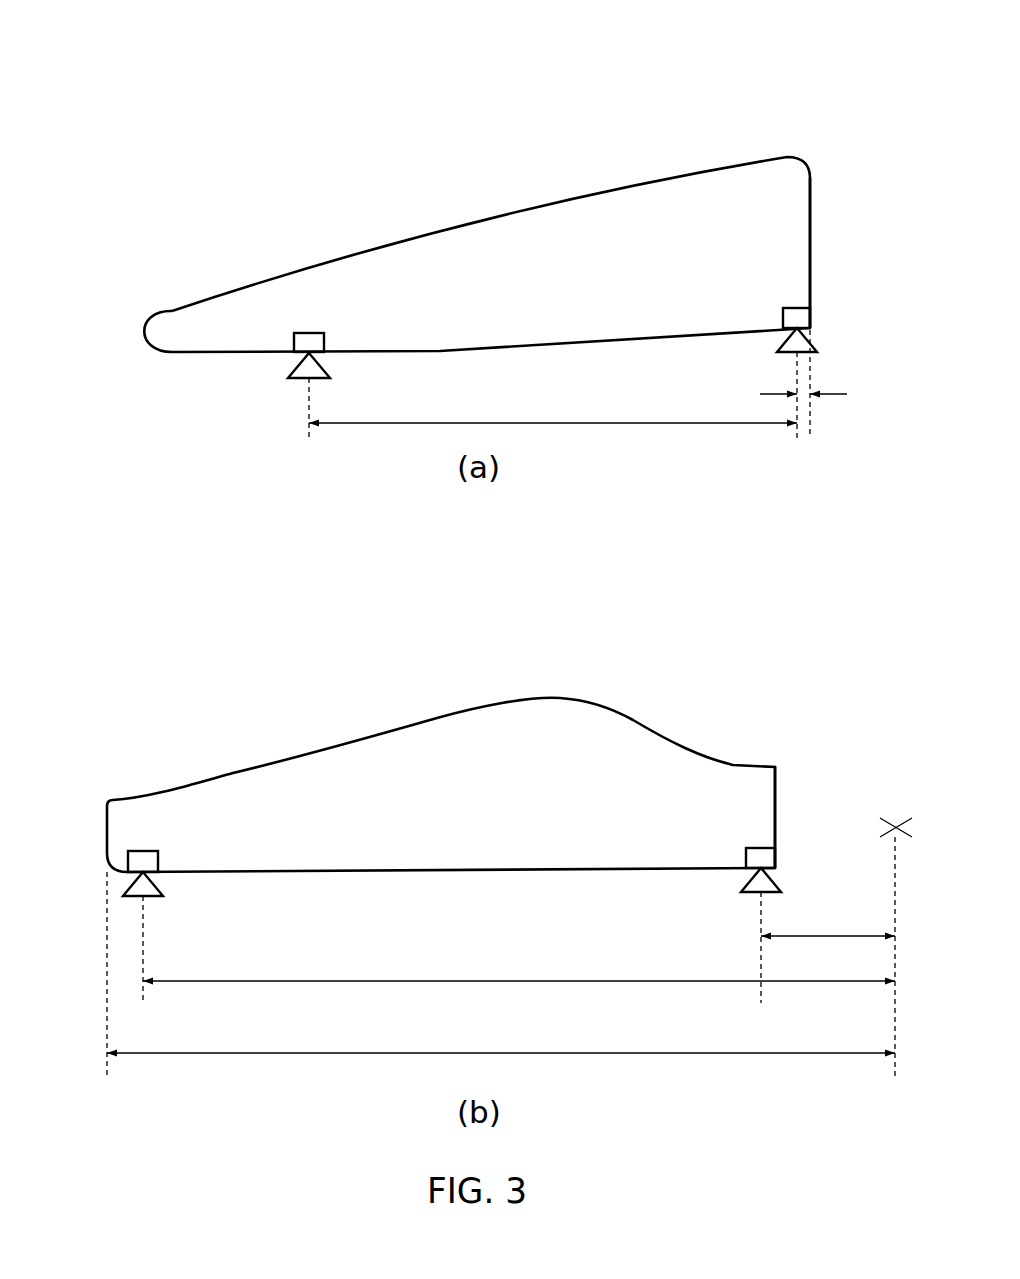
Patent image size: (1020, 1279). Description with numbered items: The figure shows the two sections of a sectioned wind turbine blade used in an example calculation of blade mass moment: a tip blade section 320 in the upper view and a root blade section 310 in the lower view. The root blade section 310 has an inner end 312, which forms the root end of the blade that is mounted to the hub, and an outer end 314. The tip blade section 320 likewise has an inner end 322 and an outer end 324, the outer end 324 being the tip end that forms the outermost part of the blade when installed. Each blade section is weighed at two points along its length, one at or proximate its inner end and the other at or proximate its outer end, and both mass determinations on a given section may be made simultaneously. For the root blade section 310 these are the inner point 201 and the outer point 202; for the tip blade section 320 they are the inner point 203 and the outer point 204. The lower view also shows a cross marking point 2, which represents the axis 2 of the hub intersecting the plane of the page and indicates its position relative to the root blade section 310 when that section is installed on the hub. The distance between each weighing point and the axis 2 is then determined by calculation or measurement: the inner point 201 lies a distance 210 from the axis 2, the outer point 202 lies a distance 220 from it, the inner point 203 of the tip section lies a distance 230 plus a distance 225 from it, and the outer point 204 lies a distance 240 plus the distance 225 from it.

The axis 2 is at (896, 826).
The inner point 201 is at (777, 864).
The outer point 202 is at (143, 870).
The inner point 203 is at (811, 327).
The outer point 204 is at (311, 348).
The distance 210 is at (822, 936).
The distance 220 is at (645, 983).
The distance 225 is at (697, 1055).
The distance 230 is at (804, 395).
The distance 240 is at (681, 425).
The root blade section 310 is at (443, 721).
The inner end 312 is at (777, 791).
The outer end 314 is at (107, 832).
The tip blade section 320 is at (475, 182).
The inner end 322 is at (811, 230).
The outer end 324 is at (145, 332).